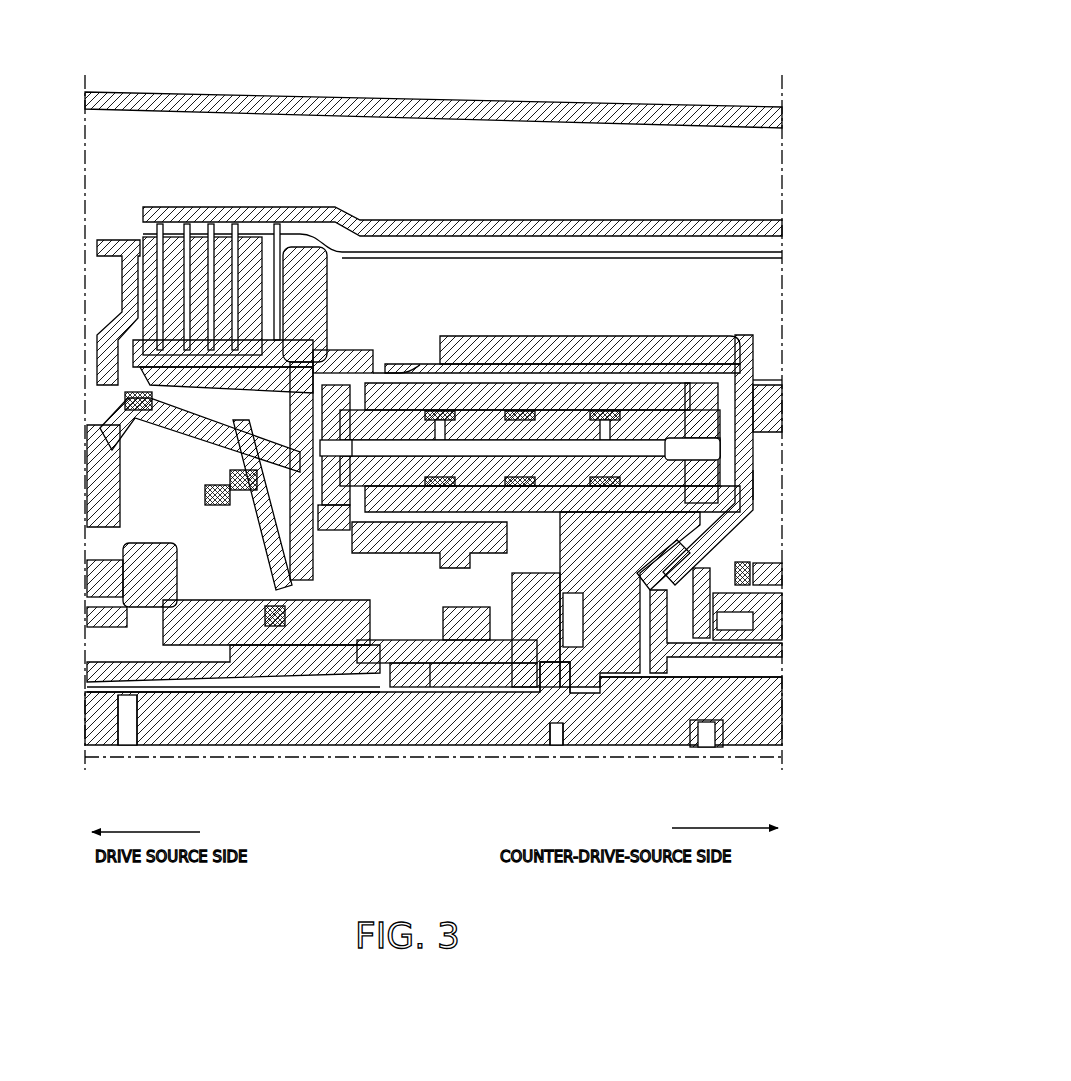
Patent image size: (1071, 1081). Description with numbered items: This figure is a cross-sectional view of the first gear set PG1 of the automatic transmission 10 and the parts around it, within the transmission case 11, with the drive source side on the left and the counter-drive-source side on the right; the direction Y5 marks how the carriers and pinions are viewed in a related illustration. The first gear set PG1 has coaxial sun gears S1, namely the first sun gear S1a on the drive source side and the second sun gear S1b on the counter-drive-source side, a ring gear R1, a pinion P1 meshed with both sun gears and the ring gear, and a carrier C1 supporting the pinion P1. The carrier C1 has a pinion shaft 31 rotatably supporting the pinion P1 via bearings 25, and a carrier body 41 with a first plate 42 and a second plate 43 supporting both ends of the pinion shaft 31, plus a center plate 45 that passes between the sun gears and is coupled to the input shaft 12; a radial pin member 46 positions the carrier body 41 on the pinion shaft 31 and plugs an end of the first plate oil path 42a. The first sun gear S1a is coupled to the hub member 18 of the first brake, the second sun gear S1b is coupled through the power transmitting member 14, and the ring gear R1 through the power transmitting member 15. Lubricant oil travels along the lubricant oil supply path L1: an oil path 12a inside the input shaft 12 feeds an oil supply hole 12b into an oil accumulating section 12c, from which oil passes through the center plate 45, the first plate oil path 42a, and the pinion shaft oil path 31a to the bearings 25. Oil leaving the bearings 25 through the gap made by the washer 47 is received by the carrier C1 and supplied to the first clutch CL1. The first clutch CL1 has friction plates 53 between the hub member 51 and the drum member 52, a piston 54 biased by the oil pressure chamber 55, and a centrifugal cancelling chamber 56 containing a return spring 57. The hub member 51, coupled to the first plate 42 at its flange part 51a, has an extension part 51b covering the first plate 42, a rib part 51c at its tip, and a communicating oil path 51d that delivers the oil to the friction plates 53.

The automatic transmission 10 is at (718, 46).
The transmission case 11 is at (690, 100).
The input shaft 12 is at (92, 712).
The oil path 12a is at (150, 758).
The oil supply hole 12b is at (556, 740).
The oil accumulating section 12c is at (570, 742).
The power transmitting member 14 is at (785, 705).
The power transmitting member 15 is at (768, 565).
The hub member 18 is at (92, 666).
The bearings 25 is at (758, 385).
The pinion shaft 31 is at (755, 480).
The pinion shaft oil path 31a is at (725, 447).
The carrier body 41 is at (766, 410).
The first plate 42 is at (336, 506).
The first plate oil path 42a is at (345, 532).
The second plate 43 is at (702, 505).
The center plate 45 is at (530, 575).
The pin member 46 is at (120, 432).
The washer 47 is at (408, 383).
The hub member 51 is at (133, 372).
The flange part 51a is at (296, 588).
The extension part 51b is at (343, 355).
The rib part 51c is at (383, 372).
The communicating oil path 51d is at (326, 335).
The drum member 52 is at (292, 207).
The friction plates 53 is at (210, 237).
The piston 54 is at (122, 300).
The oil pressure chamber 55 is at (110, 460).
The centrifugal cancelling chamber 56 is at (125, 585).
The return spring 57 is at (125, 556).
The first clutch CL1 is at (330, 258).
The first gear set PG1 is at (672, 332).
The pinion P1 is at (545, 375).
The ring gear R1 is at (618, 337).
The sun gears S1 is at (440, 625).
The first sun gear S1a is at (430, 668).
The second sun gear S1b is at (665, 716).
The carrier C1 is at (752, 510).
The lubricant oil supply path L1 is at (398, 470).
The viewing direction Y5 is at (315, 92).